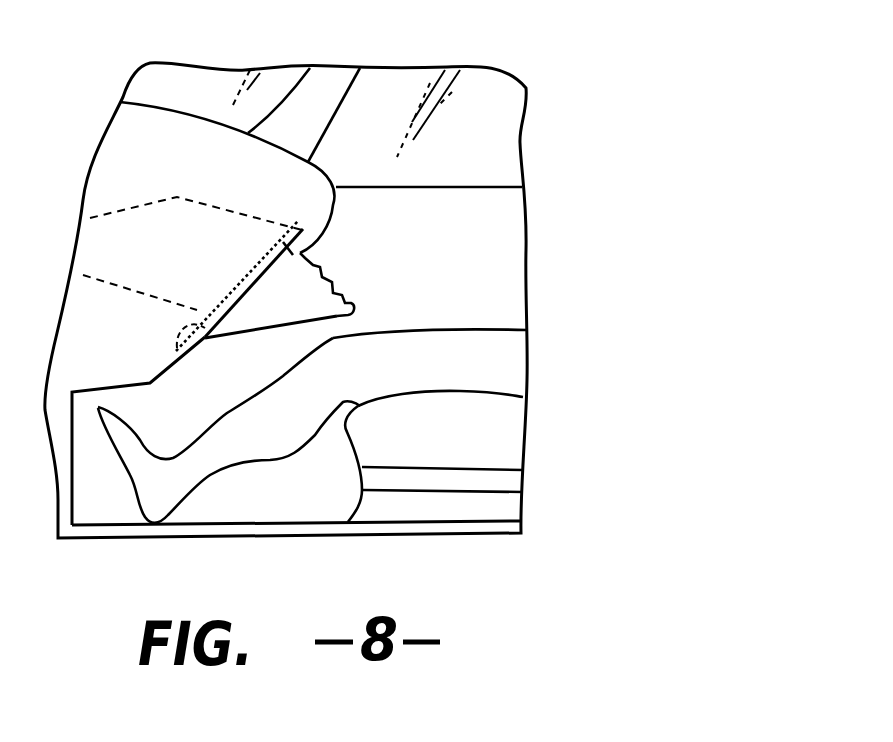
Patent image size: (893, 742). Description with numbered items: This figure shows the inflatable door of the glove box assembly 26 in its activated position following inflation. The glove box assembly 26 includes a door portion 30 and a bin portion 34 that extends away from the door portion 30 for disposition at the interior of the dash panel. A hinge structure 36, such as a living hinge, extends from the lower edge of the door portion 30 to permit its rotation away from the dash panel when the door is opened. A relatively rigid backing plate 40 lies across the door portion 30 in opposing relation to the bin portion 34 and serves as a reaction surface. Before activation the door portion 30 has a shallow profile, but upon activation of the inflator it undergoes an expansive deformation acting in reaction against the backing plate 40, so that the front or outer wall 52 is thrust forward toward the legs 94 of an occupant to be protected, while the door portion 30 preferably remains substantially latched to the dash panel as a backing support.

The glove box assembly 26 is at (427, 234).
The door portion 30 is at (378, 313).
The bin portion 34 is at (244, 213).
The hinge structure 36 is at (176, 356).
The backing plate 40 is at (235, 294).
The outer wall 52 is at (272, 333).
The legs 94 is at (470, 330).